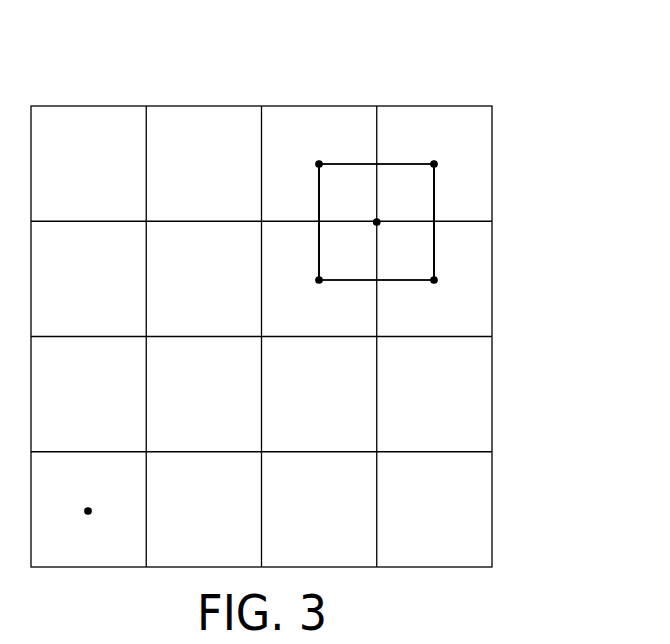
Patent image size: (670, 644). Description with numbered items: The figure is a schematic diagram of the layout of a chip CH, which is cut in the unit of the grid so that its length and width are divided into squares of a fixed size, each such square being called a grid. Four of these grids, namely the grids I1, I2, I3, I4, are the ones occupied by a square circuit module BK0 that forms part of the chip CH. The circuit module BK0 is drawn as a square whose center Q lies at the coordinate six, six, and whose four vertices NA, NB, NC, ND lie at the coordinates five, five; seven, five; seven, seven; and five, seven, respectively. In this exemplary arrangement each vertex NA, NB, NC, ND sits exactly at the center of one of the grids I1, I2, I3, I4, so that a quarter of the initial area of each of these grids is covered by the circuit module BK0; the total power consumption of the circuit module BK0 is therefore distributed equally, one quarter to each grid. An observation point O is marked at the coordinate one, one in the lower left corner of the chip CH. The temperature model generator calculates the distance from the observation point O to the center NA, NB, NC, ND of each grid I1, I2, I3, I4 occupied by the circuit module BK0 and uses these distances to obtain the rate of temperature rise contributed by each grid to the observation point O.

The chip CH is at (518, 122).
The circuit module BK0 is at (425, 253).
The target point Q (6,6) Q is at (391, 209).
The observation point O is at (87, 527).
The vertex NA is at (320, 296).
The vertex NB is at (434, 296).
The vertex NC is at (434, 147).
The vertex ND is at (320, 147).
The grid I1 is at (302, 251).
The grid I2 is at (451, 251).
The grid I3 is at (448, 193).
The grid I4 is at (302, 193).